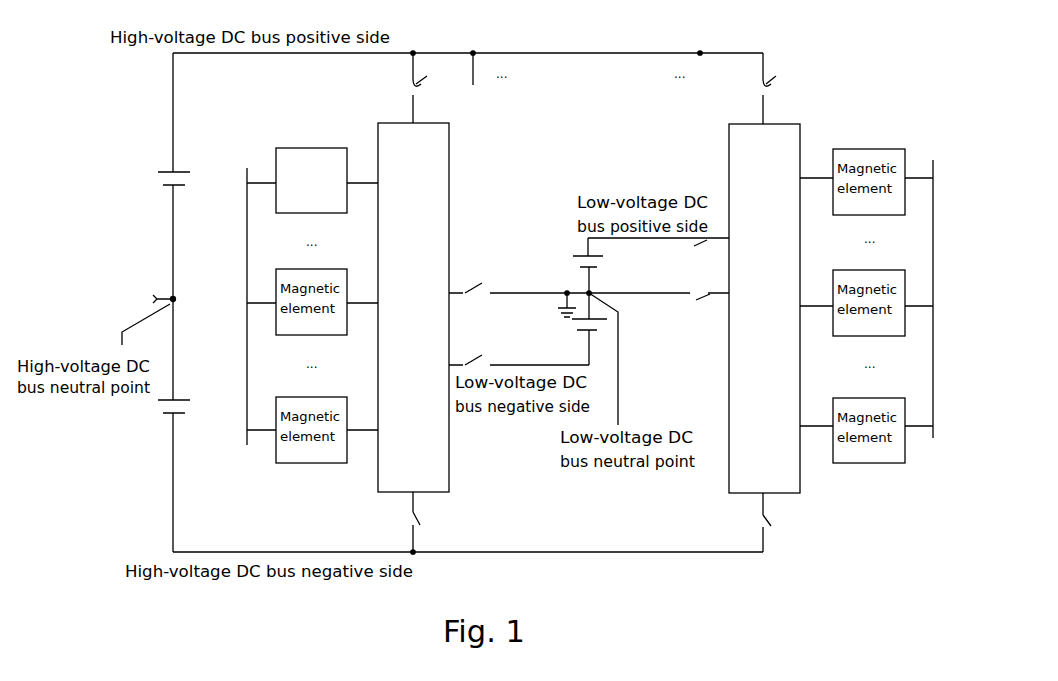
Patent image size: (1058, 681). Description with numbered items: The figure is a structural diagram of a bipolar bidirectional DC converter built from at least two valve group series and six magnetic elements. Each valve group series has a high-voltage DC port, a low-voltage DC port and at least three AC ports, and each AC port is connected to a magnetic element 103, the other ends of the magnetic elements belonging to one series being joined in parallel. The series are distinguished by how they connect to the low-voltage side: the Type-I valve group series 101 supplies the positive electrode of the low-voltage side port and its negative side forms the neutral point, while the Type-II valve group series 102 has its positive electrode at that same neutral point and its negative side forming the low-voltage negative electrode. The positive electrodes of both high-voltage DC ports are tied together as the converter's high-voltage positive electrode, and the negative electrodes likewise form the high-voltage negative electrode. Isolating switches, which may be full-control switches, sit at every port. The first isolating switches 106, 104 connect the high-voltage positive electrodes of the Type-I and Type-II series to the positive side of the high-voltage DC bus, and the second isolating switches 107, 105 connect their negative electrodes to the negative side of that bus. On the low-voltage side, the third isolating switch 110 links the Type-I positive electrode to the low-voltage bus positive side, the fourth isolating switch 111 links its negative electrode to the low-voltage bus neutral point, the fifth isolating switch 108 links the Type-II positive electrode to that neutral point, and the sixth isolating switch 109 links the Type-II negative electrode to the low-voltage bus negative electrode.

The Type-I valve group series 101 is at (420, 155).
The Type-II valve group series 102 is at (782, 145).
The magnetic element 103 is at (300, 148).
The first isolating switch 104 is at (427, 77).
The second isolating switch 105 is at (427, 528).
The first isolating switch 106 is at (770, 78).
The second isolating switch 107 is at (772, 528).
The fifth isolating switch 108 is at (475, 281).
The sixth isolating switch 109 is at (475, 353).
The third isolating switch 110 is at (708, 243).
The fourth isolating switch 111 is at (708, 297).